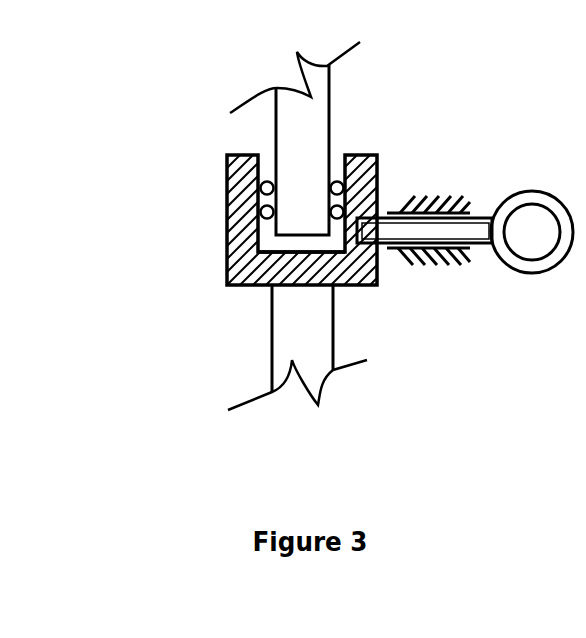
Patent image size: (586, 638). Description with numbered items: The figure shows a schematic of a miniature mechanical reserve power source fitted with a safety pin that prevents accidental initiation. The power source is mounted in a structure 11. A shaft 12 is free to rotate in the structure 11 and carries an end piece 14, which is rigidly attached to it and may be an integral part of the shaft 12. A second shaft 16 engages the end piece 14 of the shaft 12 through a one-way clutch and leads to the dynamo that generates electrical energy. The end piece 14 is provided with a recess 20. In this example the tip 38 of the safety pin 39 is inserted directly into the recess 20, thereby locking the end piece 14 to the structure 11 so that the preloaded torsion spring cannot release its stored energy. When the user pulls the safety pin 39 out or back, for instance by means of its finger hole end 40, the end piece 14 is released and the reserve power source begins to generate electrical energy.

The structure 11 is at (446, 276).
The shaft 12 is at (292, 323).
The end piece 14 is at (235, 227).
The shaft 16 is at (299, 171).
The recess 20 is at (360, 252).
The tip 38 is at (370, 230).
The safety pin 39 is at (425, 230).
The finger hole end 40 is at (542, 197).